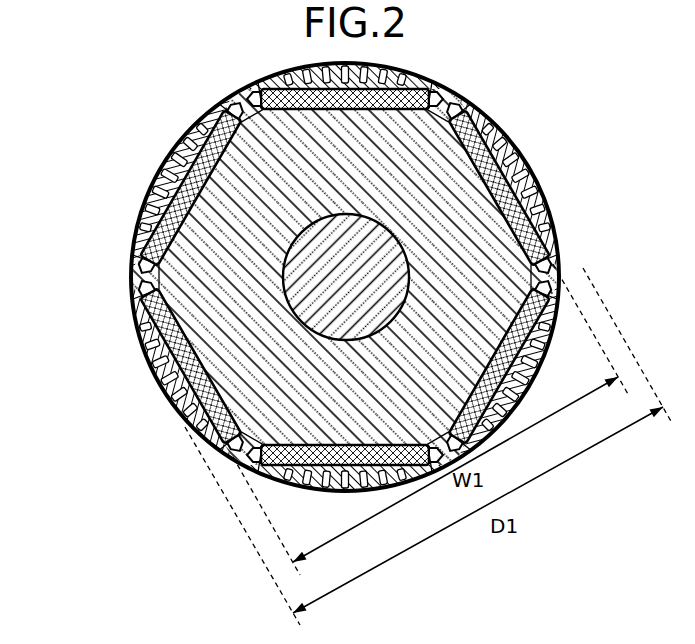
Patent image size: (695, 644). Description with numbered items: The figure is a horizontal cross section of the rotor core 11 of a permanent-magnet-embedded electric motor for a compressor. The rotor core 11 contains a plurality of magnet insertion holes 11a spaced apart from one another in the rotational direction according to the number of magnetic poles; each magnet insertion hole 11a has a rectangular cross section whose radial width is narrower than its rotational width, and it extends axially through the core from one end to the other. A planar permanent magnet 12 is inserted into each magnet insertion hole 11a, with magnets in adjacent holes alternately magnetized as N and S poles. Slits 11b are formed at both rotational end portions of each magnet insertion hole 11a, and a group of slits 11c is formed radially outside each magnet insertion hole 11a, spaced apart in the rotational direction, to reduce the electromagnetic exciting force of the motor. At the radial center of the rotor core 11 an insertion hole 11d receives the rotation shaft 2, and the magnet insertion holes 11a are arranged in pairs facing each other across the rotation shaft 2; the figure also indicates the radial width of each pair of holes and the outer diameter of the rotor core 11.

The rotor core 11 is at (237, 128).
The magnet insertion hole 11a is at (195, 170).
The slit 11b is at (140, 263).
The slit 11c is at (170, 380).
The insertion hole 11d is at (302, 325).
The permanent magnet 12 is at (167, 216).
The rotation shaft 2 is at (317, 285).